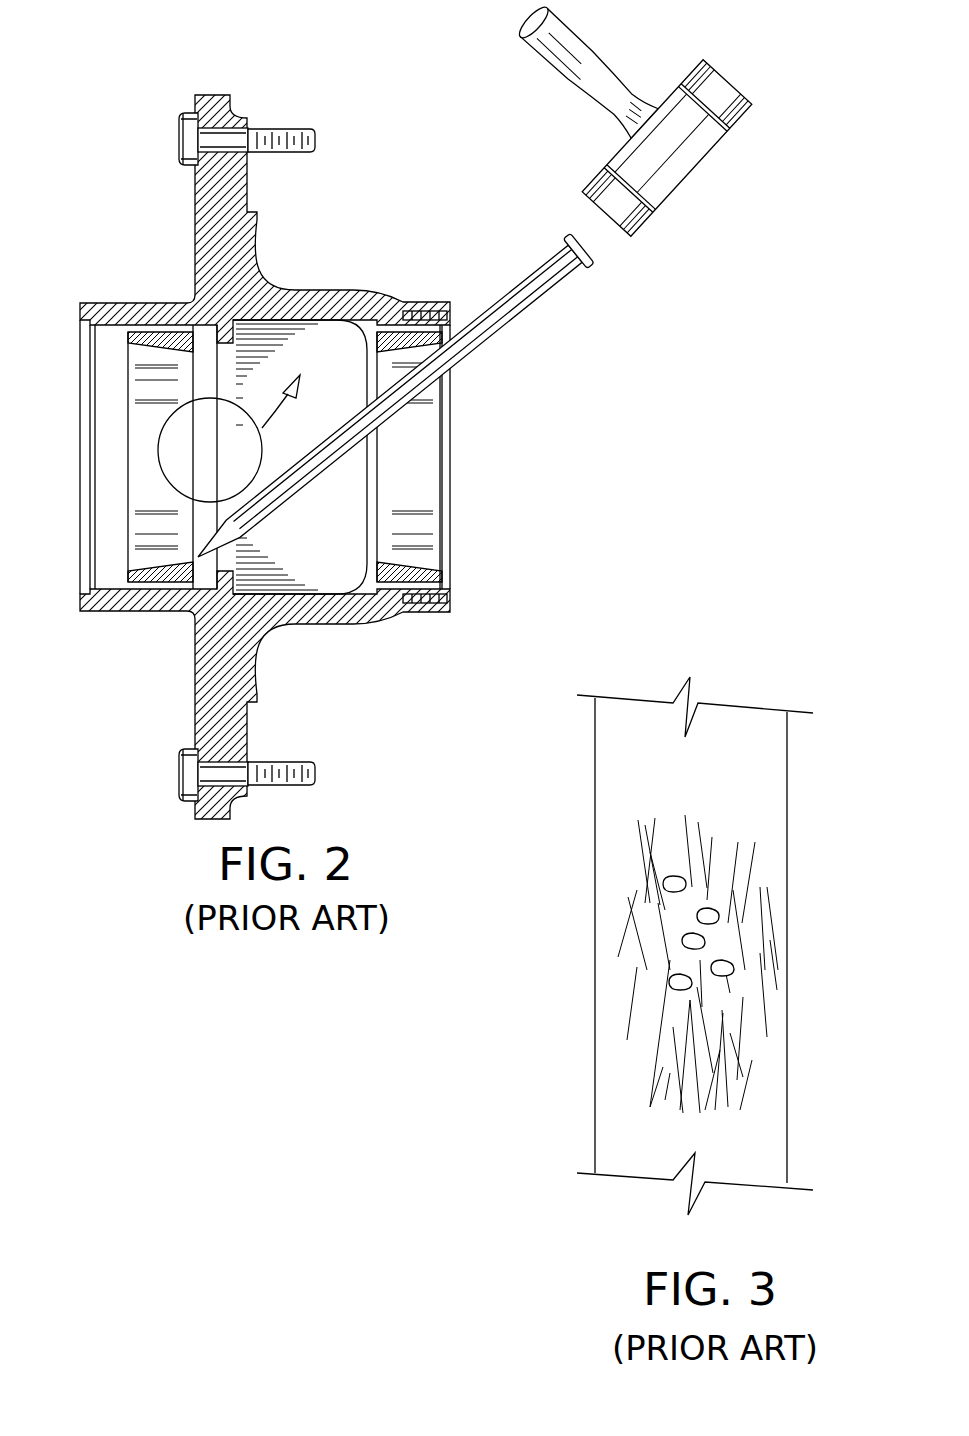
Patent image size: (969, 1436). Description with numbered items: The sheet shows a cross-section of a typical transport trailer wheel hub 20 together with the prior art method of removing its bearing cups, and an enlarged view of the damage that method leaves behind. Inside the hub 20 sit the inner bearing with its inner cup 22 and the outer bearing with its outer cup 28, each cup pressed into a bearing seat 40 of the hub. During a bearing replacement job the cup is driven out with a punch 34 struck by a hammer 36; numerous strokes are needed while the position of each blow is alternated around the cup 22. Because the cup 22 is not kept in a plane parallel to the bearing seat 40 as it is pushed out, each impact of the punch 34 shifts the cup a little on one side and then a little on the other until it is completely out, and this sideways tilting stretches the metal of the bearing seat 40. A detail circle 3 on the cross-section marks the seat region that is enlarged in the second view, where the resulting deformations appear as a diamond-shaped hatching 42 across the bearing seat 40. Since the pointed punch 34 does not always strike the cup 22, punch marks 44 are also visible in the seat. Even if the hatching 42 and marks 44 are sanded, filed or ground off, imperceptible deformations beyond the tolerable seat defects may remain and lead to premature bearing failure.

In FIG. 2, the wheel hub 20 is at (327, 290).
In FIG. 2, the inner cup 22 is at (143, 347).
In FIG. 2, the outer cup 28 is at (420, 567).
In FIG. 2, the bearing seat 40 is at (205, 438).
In FIG. 3, the bearing seat 40 is at (657, 785).
In FIG. 2, the punch 34 is at (515, 318).
In FIG. 2, the hammer 36 is at (690, 178).
In FIG. 2, the detail circle 3 is at (292, 384).
In FIG. 3, the diamond-shaped hatching 42 is at (650, 1084).
In FIG. 3, the punch marks 44 is at (668, 983).